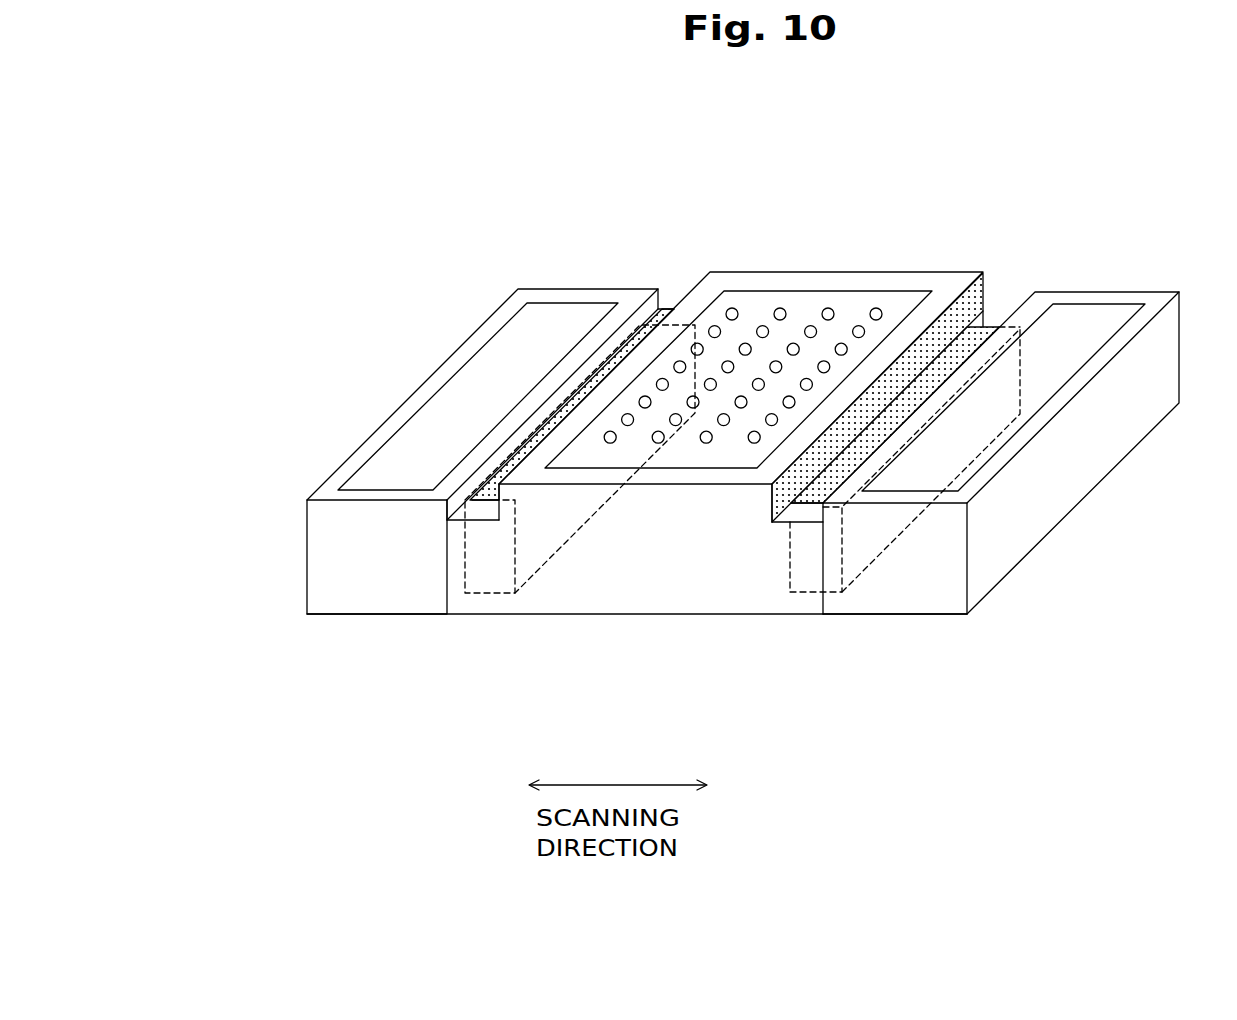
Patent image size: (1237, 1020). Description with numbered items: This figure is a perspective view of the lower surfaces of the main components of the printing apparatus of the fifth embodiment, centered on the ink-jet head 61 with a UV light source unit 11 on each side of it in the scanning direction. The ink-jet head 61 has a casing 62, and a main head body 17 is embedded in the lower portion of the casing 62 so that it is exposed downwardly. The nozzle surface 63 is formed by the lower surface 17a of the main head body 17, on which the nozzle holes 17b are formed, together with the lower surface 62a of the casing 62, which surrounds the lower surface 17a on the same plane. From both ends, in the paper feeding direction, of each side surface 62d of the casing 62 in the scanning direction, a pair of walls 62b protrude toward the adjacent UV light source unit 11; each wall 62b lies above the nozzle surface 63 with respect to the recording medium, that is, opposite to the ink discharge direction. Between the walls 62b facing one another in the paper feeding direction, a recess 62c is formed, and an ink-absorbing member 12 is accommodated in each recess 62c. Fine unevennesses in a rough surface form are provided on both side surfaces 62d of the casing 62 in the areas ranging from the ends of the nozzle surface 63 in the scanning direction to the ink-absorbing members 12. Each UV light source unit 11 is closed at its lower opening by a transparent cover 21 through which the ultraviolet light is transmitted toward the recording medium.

The UV light source unit 11 is at (290, 560).
The ink-absorbing member 12 is at (497, 593).
The main head body 17 is at (738, 448).
The lower surface of the main head body 17a is at (763, 302).
The nozzle hole 17b is at (829, 308).
The transparent cover 21 is at (518, 345).
The ink-jet head 61 is at (610, 617).
The casing 62 is at (733, 615).
The lower surface of the casing 62a is at (688, 306).
The wall 62b is at (665, 312).
The recess 62c is at (636, 336).
The side surface of the casing 62d is at (935, 345).
The nozzle surface 63 is at (741, 426).